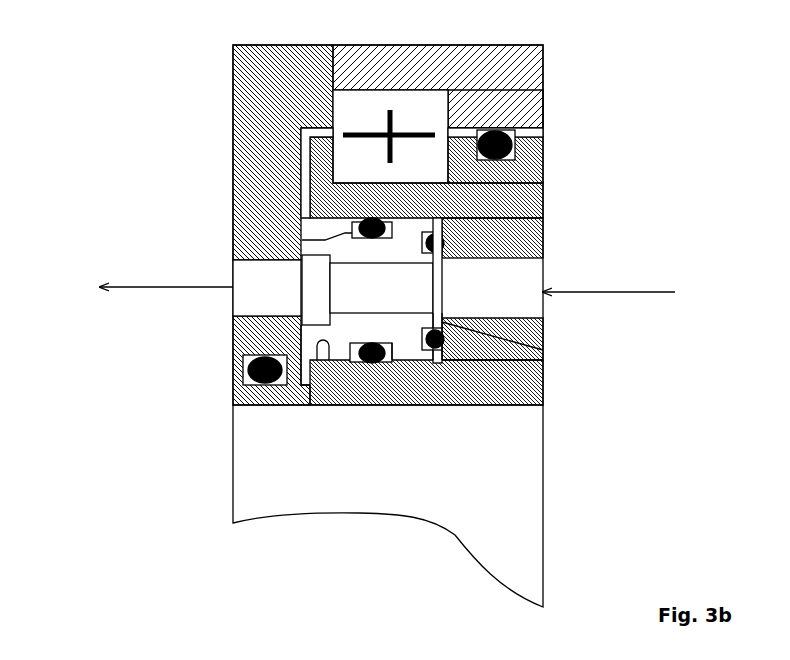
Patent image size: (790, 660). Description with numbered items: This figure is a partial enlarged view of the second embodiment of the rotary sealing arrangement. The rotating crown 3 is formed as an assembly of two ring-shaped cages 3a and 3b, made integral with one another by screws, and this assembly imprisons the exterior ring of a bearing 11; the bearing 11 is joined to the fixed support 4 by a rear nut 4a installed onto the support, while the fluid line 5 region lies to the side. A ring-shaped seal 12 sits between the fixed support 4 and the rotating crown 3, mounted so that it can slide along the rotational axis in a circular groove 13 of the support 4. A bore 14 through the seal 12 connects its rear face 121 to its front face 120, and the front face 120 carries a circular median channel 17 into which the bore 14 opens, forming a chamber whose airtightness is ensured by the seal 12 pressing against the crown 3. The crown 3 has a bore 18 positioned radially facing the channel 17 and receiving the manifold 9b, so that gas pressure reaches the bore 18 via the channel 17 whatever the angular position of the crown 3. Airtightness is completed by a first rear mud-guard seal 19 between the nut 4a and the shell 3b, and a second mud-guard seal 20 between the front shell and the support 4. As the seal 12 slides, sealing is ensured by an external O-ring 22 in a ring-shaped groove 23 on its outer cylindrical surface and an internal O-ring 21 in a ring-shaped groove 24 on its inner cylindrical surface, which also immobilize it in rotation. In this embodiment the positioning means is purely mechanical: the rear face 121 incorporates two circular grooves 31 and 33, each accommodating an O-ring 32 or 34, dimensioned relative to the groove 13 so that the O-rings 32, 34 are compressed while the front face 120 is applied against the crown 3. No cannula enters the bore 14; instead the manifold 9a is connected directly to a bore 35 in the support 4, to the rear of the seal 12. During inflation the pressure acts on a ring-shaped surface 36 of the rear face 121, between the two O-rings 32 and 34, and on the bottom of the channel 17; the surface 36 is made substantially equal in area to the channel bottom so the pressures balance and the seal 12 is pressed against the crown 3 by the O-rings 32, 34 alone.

The rotating crown 3 is at (147, 92).
The ring-shaped cage 3a is at (232, 72).
The ring-shaped cage 3b is at (540, 47).
The fixed support 4 is at (507, 373).
The rear nut 4a is at (530, 168).
The fluid line 5 is at (102, 390).
The manifold 9a is at (655, 292).
The manifold 9b is at (138, 287).
The bearing 11 is at (390, 136).
The seal 12 is at (425, 355).
The circular groove 13 is at (317, 405).
The bore 14 is at (381, 288).
The circular median channel 17 is at (317, 290).
The bore 18 is at (267, 288).
The first rear mud-guard seal 19 is at (543, 93).
The second mud-guard seal 20 is at (265, 378).
The internal seal 21 is at (372, 357).
The external seal 22 is at (355, 213).
The ring-shaped groove 23 is at (300, 240).
The ring-shaped groove 24 is at (388, 352).
The circular groove 31 is at (440, 217).
The O-ring 32 is at (445, 238).
The circular groove 33 is at (440, 345).
The O-ring 34 is at (445, 330).
The bore 35 is at (543, 308).
The ring-shaped surface 36 is at (436, 258).
The front face 120 is at (290, 342).
The rear face 121 is at (543, 353).